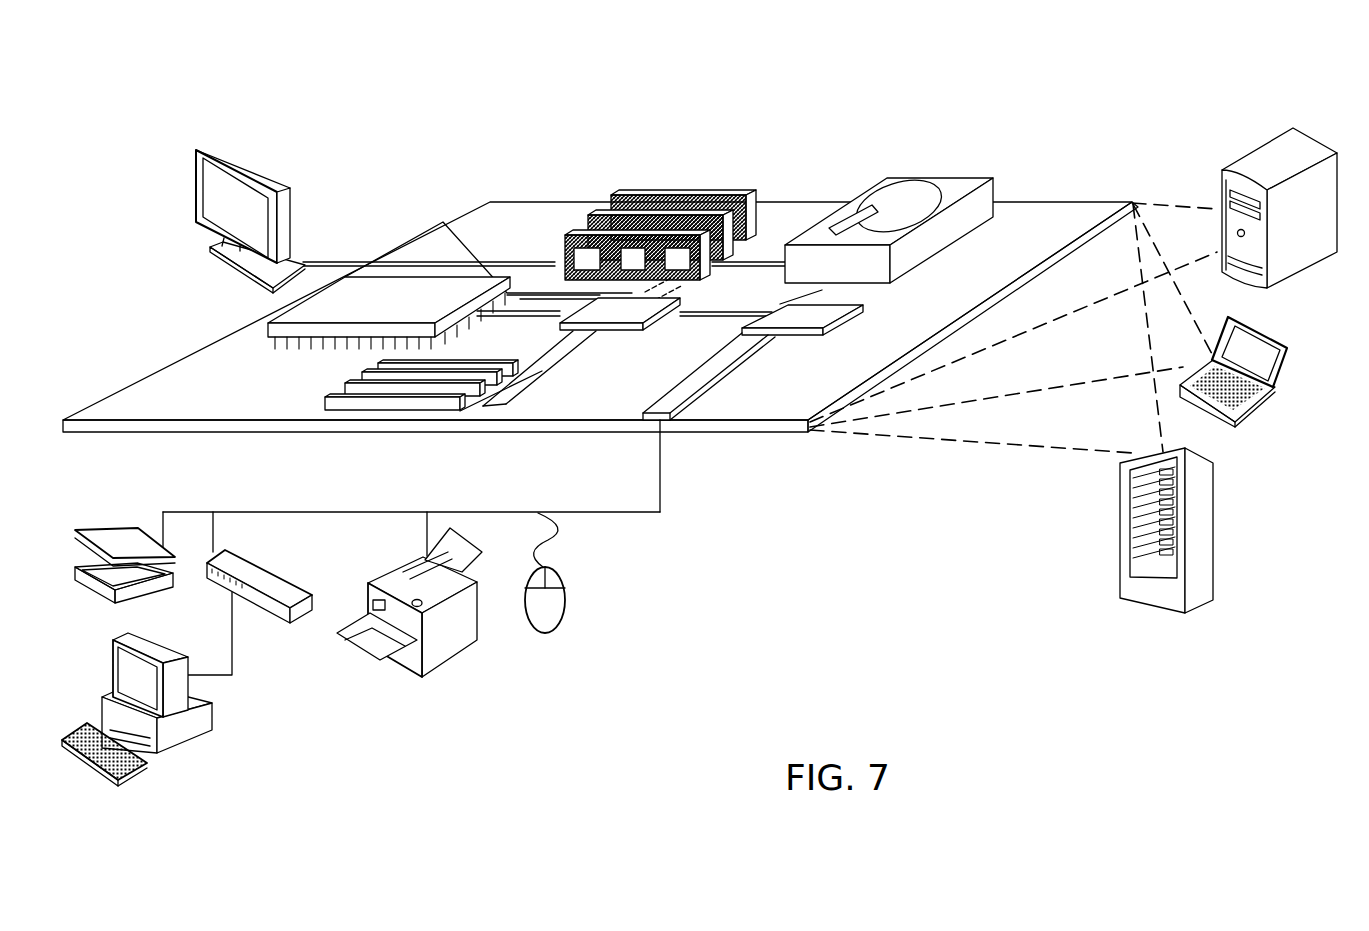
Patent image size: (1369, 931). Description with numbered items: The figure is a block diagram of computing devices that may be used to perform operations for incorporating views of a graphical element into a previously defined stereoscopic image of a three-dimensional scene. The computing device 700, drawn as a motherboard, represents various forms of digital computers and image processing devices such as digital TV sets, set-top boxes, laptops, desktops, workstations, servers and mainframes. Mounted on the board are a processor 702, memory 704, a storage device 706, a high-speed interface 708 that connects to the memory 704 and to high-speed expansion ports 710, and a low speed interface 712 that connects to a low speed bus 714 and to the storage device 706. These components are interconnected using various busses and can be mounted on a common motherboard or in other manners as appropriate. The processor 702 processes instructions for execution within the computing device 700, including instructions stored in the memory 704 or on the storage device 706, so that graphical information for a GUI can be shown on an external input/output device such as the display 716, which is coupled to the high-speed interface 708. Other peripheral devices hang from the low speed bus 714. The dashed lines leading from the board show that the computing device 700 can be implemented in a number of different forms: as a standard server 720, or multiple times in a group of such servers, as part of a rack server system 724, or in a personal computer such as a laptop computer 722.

The computing device 700 is at (401, 162).
The processor 702 is at (268, 331).
The memory 704 is at (603, 232).
The storage device 706 is at (880, 182).
The high-speed interface 708 is at (596, 311).
The high-speed expansion ports 710 is at (343, 390).
The low speed interface 712 is at (782, 313).
The low speed bus 714 is at (674, 421).
The display 716 is at (200, 146).
The standard server 720 is at (1220, 187).
The laptop computer 722 is at (1292, 352).
The rack server system 724 is at (1120, 558).